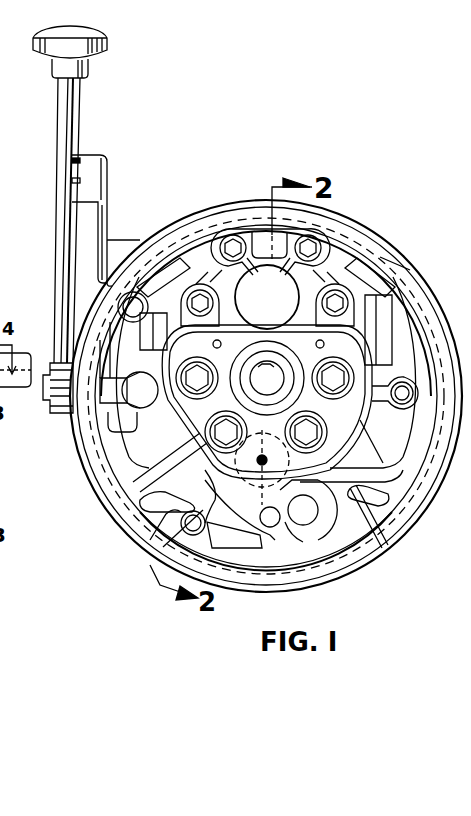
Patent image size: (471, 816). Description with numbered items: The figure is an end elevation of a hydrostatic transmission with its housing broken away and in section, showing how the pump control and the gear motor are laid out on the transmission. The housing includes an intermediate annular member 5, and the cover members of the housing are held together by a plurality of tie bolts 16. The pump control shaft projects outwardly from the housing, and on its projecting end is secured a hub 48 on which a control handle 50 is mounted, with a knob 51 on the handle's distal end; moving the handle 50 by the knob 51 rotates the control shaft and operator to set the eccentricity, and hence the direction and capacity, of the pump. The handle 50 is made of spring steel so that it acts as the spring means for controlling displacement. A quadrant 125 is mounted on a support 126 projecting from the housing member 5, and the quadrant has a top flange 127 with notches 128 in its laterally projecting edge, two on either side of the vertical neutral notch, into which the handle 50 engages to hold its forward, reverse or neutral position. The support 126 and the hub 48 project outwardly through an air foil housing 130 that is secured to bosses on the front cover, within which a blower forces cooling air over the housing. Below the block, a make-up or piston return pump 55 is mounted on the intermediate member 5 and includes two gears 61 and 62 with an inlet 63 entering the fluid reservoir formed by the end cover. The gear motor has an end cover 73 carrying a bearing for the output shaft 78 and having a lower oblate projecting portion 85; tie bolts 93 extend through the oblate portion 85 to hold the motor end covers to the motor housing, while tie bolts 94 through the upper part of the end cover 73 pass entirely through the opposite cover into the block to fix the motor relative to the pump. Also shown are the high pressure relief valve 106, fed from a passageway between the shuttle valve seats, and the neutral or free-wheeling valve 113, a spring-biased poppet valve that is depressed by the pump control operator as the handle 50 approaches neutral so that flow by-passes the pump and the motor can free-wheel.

The intermediate annular member 5 is at (146, 512).
The tie bolts 16 is at (180, 537).
The hub 48 is at (62, 413).
The control handle 50 is at (58, 248).
The knob 51 is at (102, 55).
The make-up or piston return pump 55 is at (303, 578).
The gear 61 is at (328, 572).
The gear 62 is at (250, 490).
The inlet 63 is at (278, 523).
The end cover 73 is at (260, 245).
The output shaft 78 is at (262, 378).
The lower oblate projecting portion 85 is at (192, 418).
The tie bolts 93 is at (314, 427).
The tie bolts 94 is at (312, 246).
The relief valve 106 is at (385, 550).
The neutral or free-wheeling valve 113 is at (134, 412).
The quadrant 125 is at (102, 187).
The support 126 is at (127, 248).
The top flange 127 is at (80, 193).
The notches 128 is at (72, 161).
The air foil housing 130 is at (460, 258).